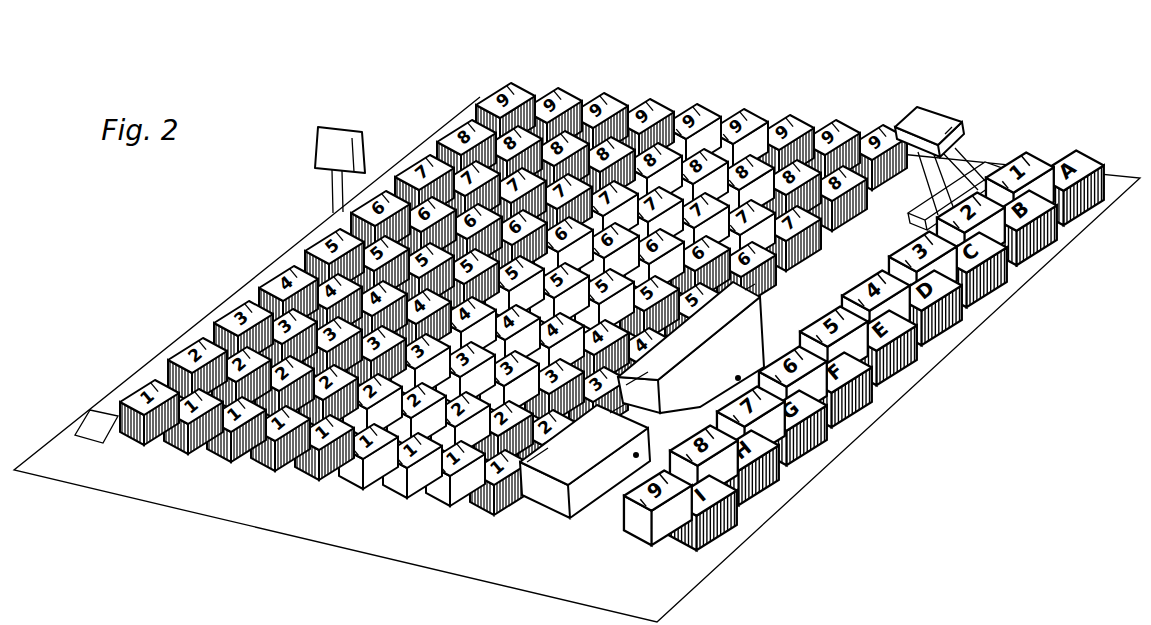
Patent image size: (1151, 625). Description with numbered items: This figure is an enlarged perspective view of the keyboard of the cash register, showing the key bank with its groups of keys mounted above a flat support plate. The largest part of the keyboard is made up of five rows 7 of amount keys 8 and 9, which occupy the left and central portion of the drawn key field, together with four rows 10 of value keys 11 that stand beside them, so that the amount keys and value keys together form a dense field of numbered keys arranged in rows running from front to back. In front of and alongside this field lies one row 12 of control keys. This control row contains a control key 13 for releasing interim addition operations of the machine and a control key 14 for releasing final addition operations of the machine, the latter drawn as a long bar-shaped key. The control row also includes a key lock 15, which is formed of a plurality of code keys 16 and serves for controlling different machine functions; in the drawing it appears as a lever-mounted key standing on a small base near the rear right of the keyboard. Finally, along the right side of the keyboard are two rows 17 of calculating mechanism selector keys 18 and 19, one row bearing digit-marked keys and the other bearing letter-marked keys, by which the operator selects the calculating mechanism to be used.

The rows of amount keys 7 is at (288, 482).
The amount key 8 is at (883, 132).
The amount key 9 is at (780, 127).
The rows of value keys 10 is at (283, 482).
The value key 11 is at (638, 110).
The row of control keys 12 is at (585, 499).
The control key 13 is at (585, 467).
The control key 14 is at (733, 340).
The key lock 15 is at (977, 177).
The code key 16 is at (932, 105).
The rows of calculating mechanism selector keys 17 is at (864, 361).
The calculating mechanism selector key 18 is at (1017, 163).
The calculating mechanism selector key 19 is at (1067, 165).